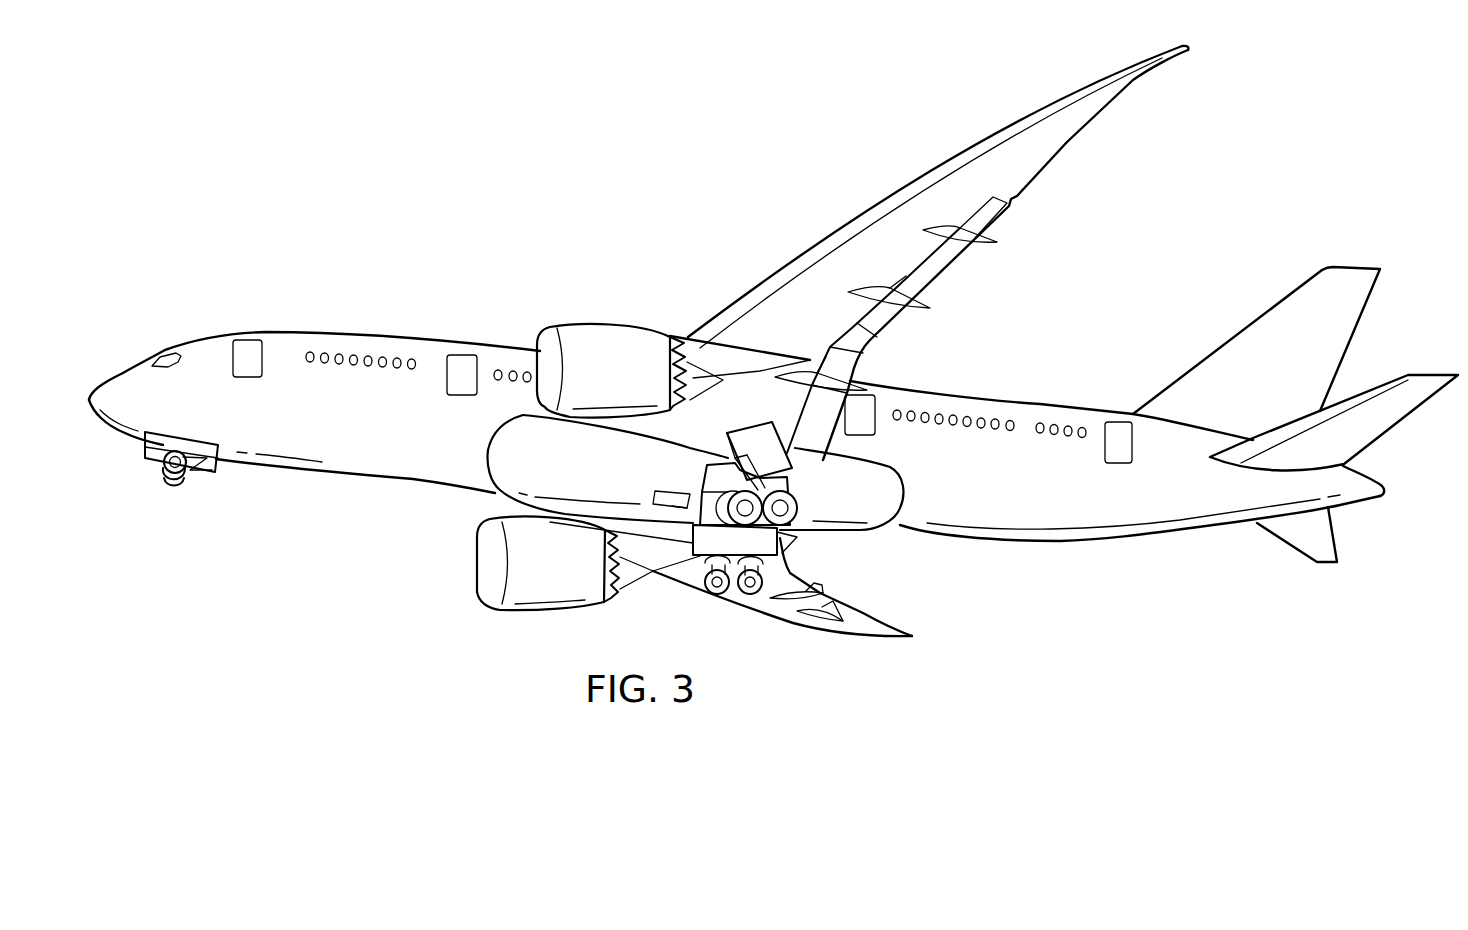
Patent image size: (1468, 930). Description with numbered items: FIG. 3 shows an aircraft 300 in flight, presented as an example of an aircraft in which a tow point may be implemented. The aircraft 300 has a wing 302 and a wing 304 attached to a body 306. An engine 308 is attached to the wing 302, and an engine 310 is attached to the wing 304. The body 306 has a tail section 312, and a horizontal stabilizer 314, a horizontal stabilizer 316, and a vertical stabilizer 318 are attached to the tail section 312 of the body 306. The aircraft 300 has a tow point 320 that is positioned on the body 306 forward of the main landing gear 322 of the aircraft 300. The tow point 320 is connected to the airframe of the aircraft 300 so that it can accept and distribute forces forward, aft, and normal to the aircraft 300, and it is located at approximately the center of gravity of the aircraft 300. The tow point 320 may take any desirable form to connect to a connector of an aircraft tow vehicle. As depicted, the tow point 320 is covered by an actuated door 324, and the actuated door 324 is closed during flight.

The aircraft 300 is at (362, 256).
The wing 302 is at (851, 230).
The wing 304 is at (778, 621).
The body 306 is at (330, 477).
The engine 308 is at (592, 323).
The engine 310 is at (527, 611).
The tail section 312 is at (1409, 281).
The horizontal stabilizer 314 is at (1405, 420).
The horizontal stabilizer 316 is at (1338, 542).
The vertical stabilizer 318 is at (1252, 326).
The tow point 320 is at (649, 494).
The main landing gear 322 is at (811, 501).
The actuated door 324 is at (678, 507).